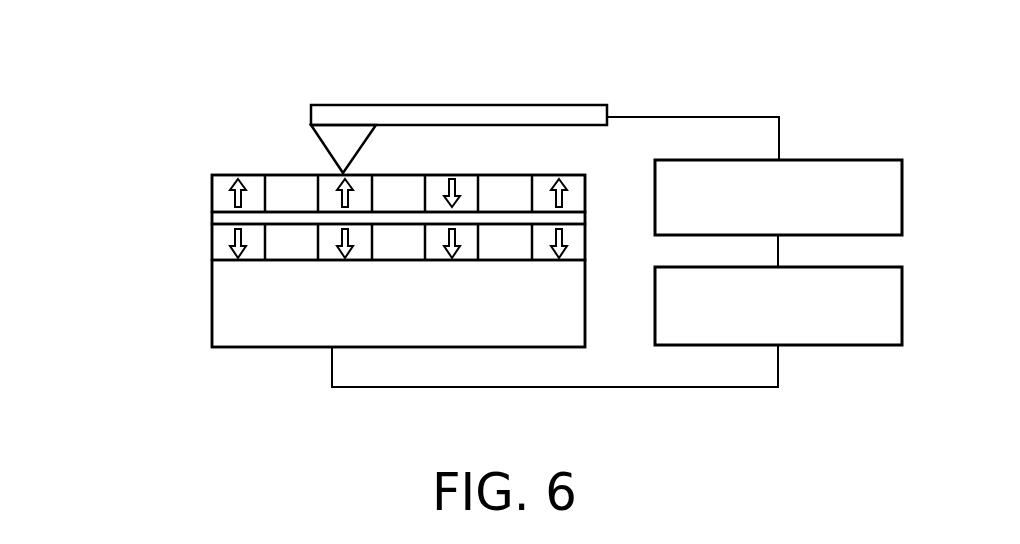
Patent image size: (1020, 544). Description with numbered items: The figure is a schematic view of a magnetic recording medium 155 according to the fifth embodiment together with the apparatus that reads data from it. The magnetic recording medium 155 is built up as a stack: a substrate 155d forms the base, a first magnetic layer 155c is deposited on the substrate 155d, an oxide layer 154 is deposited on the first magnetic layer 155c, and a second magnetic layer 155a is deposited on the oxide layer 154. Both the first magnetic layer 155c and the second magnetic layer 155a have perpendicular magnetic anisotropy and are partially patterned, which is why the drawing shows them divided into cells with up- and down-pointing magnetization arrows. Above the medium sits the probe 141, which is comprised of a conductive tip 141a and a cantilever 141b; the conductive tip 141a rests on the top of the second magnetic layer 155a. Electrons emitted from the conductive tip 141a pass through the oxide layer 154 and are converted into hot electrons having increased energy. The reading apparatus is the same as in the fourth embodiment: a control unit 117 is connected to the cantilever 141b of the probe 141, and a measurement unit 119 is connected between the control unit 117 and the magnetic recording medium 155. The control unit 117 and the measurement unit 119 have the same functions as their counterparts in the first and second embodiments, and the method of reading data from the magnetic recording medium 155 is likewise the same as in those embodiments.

The probe 141 is at (396, 98).
The conductive tip 141a is at (352, 144).
The cantilever 141b is at (405, 117).
The control unit 117 is at (840, 158).
The measurement unit 119 is at (845, 347).
The magnetic recording medium 155 is at (90, 160).
The second magnetic layer 155a is at (212, 193).
The oxide layer 154 is at (212, 215).
The first magnetic layer 155c is at (212, 240).
The substrate 155d is at (212, 275).